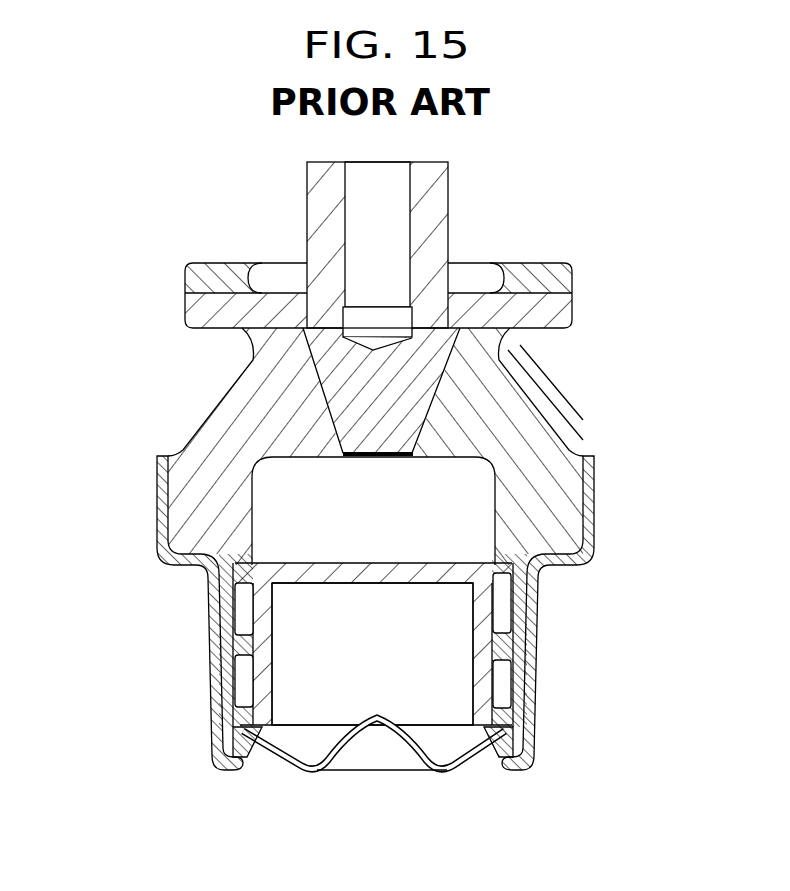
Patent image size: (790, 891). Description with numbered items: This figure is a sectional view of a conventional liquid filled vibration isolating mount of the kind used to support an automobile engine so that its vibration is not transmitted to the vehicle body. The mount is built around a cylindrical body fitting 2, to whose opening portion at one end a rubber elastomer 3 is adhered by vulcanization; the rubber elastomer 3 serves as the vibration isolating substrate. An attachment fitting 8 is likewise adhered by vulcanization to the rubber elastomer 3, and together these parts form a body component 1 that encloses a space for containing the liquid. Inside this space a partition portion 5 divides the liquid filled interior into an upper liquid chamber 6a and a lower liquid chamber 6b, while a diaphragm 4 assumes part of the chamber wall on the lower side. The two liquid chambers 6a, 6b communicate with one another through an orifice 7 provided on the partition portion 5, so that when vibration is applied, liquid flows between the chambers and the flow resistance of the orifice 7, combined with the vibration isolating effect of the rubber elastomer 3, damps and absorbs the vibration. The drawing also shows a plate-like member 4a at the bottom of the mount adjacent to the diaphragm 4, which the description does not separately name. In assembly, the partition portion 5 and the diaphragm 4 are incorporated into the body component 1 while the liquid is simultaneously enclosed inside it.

The body component 1 is at (606, 513).
The cylindrical body fitting 2 is at (520, 657).
The rubber elastomer 3 is at (483, 413).
The diaphragm 4 is at (410, 774).
The corrugated spring plate 4a is at (528, 743).
The partition portion 5 is at (515, 618).
The upper liquid chamber 6a is at (275, 505).
The lower liquid chamber 6b is at (290, 644).
The orifice 7 is at (528, 480).
The attachment fitting 8 is at (445, 187).